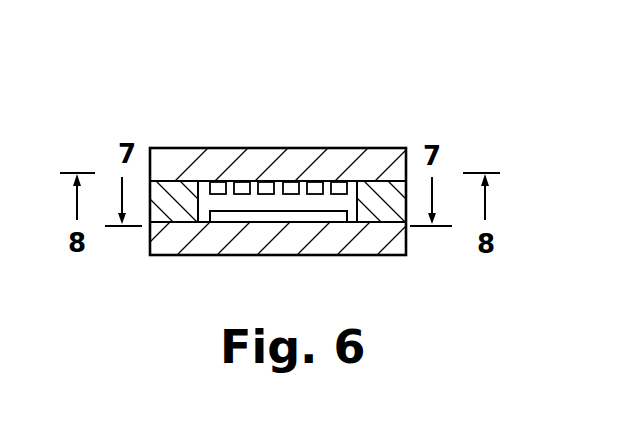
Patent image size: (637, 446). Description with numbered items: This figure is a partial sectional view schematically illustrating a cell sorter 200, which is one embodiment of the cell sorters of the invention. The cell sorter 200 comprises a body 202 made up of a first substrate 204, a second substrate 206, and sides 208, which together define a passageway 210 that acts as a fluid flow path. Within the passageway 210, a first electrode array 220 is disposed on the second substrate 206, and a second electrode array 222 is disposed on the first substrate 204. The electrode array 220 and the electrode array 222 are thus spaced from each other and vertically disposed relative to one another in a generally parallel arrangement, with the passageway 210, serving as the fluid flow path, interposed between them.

The cell sorter 200 is at (290, 96).
The body 202 is at (370, 148).
The first substrate 204 is at (267, 160).
The second substrate 206 is at (210, 250).
The sides 208 is at (163, 198).
The passageway 210 is at (362, 193).
The first electrode array 220 is at (319, 234).
The second electrode array 222 is at (316, 170).